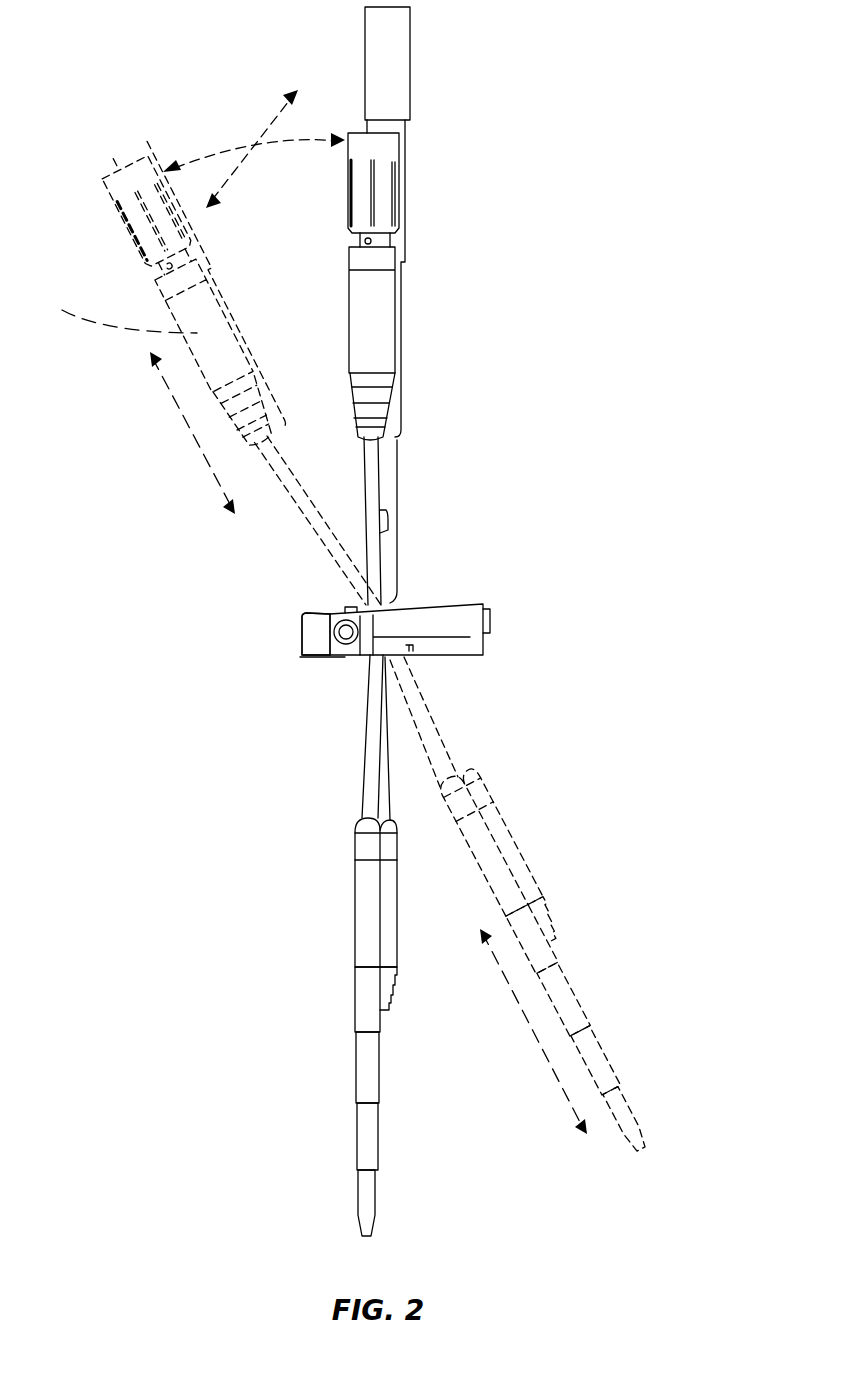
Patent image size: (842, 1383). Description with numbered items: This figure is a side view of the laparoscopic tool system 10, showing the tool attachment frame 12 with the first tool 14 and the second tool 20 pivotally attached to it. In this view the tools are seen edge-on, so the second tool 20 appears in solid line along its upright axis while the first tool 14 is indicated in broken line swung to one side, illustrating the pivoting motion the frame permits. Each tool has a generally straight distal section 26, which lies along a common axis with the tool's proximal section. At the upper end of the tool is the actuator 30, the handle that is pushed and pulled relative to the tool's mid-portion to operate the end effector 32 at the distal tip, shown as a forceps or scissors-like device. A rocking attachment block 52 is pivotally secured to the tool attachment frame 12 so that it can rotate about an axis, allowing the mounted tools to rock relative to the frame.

The laparoscopic tool system 10 is at (547, 198).
The tool attachment frame 12 is at (488, 630).
The first tool 14 is at (365, 297).
The second tool 20 is at (398, 240).
The distal section 26 is at (407, 268).
The actuator 30 is at (395, 43).
The end effector 32 is at (365, 1220).
The rocking attachment block 52 is at (325, 648).